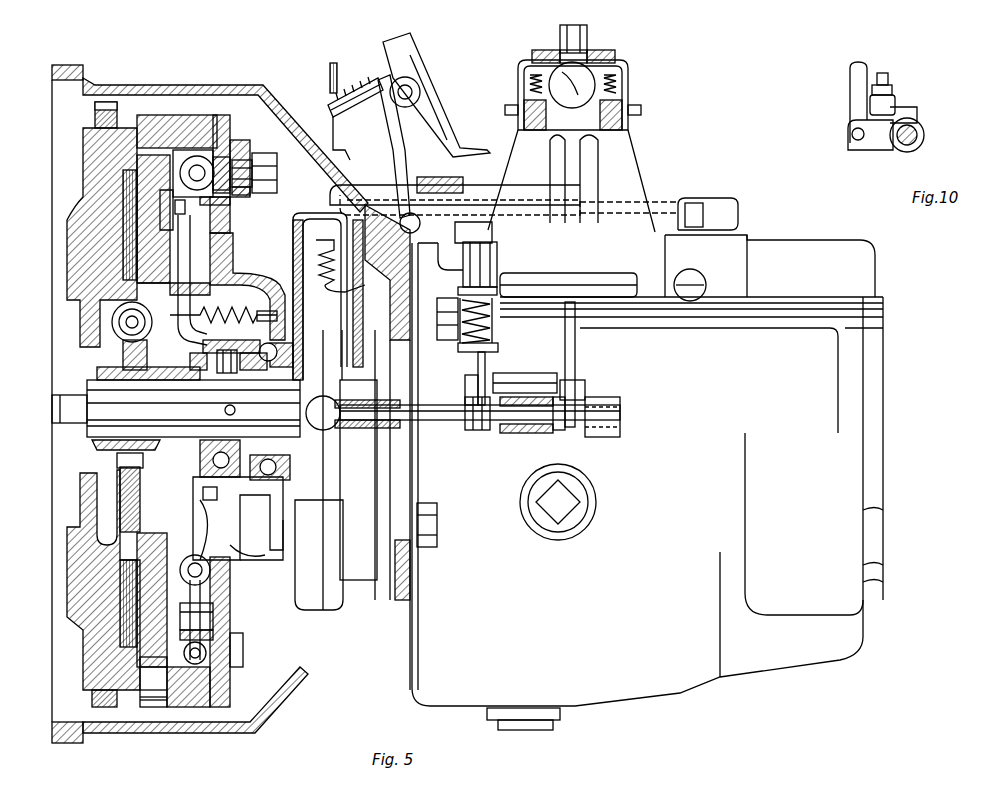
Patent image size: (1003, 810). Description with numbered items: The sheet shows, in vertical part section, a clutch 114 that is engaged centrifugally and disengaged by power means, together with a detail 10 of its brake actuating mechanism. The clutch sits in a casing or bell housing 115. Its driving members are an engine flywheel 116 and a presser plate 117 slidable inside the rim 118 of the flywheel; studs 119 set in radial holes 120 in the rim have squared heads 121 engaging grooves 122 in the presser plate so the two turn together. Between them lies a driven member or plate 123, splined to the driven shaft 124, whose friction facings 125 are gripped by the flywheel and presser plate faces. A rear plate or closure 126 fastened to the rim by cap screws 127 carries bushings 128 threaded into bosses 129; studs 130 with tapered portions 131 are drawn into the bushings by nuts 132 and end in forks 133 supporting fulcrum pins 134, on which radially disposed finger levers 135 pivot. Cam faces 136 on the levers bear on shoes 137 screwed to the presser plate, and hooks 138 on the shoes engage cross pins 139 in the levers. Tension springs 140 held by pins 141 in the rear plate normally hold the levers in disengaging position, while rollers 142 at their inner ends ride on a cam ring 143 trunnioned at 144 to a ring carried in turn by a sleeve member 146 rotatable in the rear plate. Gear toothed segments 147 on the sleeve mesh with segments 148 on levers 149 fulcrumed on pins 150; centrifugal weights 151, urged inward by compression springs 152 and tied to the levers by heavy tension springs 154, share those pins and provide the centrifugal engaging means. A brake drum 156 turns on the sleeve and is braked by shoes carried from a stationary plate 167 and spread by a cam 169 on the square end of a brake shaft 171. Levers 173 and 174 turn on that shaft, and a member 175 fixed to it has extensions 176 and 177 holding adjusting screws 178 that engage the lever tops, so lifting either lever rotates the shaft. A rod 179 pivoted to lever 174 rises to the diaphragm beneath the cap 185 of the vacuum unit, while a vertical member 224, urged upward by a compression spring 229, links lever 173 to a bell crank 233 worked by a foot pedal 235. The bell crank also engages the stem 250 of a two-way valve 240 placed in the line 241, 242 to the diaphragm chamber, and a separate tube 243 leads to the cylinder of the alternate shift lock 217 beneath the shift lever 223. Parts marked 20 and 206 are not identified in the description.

In FIG. 5, the casing or bell housing 115 is at (178, 730).
In FIG. 5, the engine flywheel 116 is at (82, 600).
In FIG. 5, the presser plate 117 is at (150, 165).
In FIG. 5, the rim 118 is at (170, 125).
In FIG. 5, the clutch 114 is at (180, 150).
In FIG. 5, the forks 133 is at (197, 165).
In FIG. 5, the tapered portions 131 is at (236, 160).
In FIG. 5, the bosses 129 is at (242, 172).
In FIG. 5, the bushings 128 is at (262, 160).
In FIG. 5, the nuts 132 is at (250, 192).
In FIG. 5, the studs 130 is at (248, 192).
In FIG. 5, the fulcrum pins 134 is at (228, 205).
In FIG. 5, the cross pins 139 is at (200, 178).
In FIG. 5, the finger levers 135 is at (190, 262).
In FIG. 5, the cam faces 136 is at (173, 197).
In FIG. 5, the hooks 138 is at (177, 207).
In FIG. 5, the shoes 137 is at (167, 217).
In FIG. 5, the tension springs 140 is at (226, 310).
In FIG. 5, the pins 141 is at (262, 335).
In FIG. 5, the rollers 142 is at (175, 368).
In FIG. 5, the driven shaft 124 is at (100, 425).
In FIG. 5, the cam ring 143 is at (208, 462).
In FIG. 5, the driven member or plate 123 is at (124, 487).
In FIG. 5, the segments 148 is at (204, 494).
In FIG. 5, the trunnion 144 is at (232, 490).
In FIG. 5, the peripheral gear toothed segments 147 is at (215, 510).
In FIG. 5, the levers 149 is at (237, 556).
In FIG. 5, the sleeve member 146 is at (275, 540).
In FIG. 5, the heavy tension springs 154 is at (208, 585).
In FIG. 5, the pins 150 is at (212, 616).
In FIG. 5, the centrifugal weights 151 is at (228, 640).
In FIG. 5, the cap screws 127 is at (246, 644).
In FIG. 5, the compression springs 152 is at (206, 660).
In FIG. 5, the rear plate or closure 126 is at (226, 686).
In FIG. 5, the grooves 122 is at (137, 660).
In FIG. 5, the radial holes 120 is at (157, 710).
In FIG. 5, the squared heads 121 is at (128, 708).
In FIG. 5, the studs 119 is at (147, 708).
In FIG. 5, the friction facings 125 is at (128, 612).
In FIG. 5, the stationary plate 167 is at (345, 290).
In FIG. 5, the brake drum 156 is at (306, 610).
In FIG. 5, the cam 169 is at (332, 420).
In FIG. 5, the foot pedal 235 is at (447, 135).
In FIG. 5, the bell crank 233 is at (400, 190).
In FIG. 5, the two-way valve 240 is at (356, 112).
In FIG. 5, the stem 250 is at (393, 152).
In FIG. 5, the line 241 is at (445, 183).
In FIG. 5, the line 242 is at (500, 207).
In FIG. 5, the tube 243 is at (665, 215).
In FIG. 5, the shift lever 223 is at (590, 45).
In FIG. 5, the cap 206 is at (620, 67).
In FIG. 5, the governor 20 is at (628, 98).
In FIG. 5, the alternate form of shift lock 217 is at (740, 250).
In FIG. 5, the upper casing member or cap 185 is at (598, 283).
In FIG. 5, the compression spring 229 is at (495, 335).
In FIG. 5, the vertical member 224 is at (485, 356).
In FIG. 5, the member 175 is at (515, 390).
In FIG. 10, the member 175 is at (915, 112).
In FIG. 5, the extension 176 is at (465, 381).
In FIG. 5, the rod 179 is at (575, 365).
In FIG. 5, the extension 177 is at (580, 386).
In FIG. 10, the extension 177 is at (892, 103).
In FIG. 5, the brake shaft 171 is at (455, 420).
In FIG. 10, the brake shaft 171 is at (922, 131).
In FIG. 5, the lever 173 is at (478, 428).
In FIG. 5, the lever 174 is at (582, 432).
In FIG. 10, the lever 174 is at (866, 138).
In FIG. 5, the section line 10 is at (562, 350).
In FIG. 10, the adjusting screws 178 is at (890, 80).